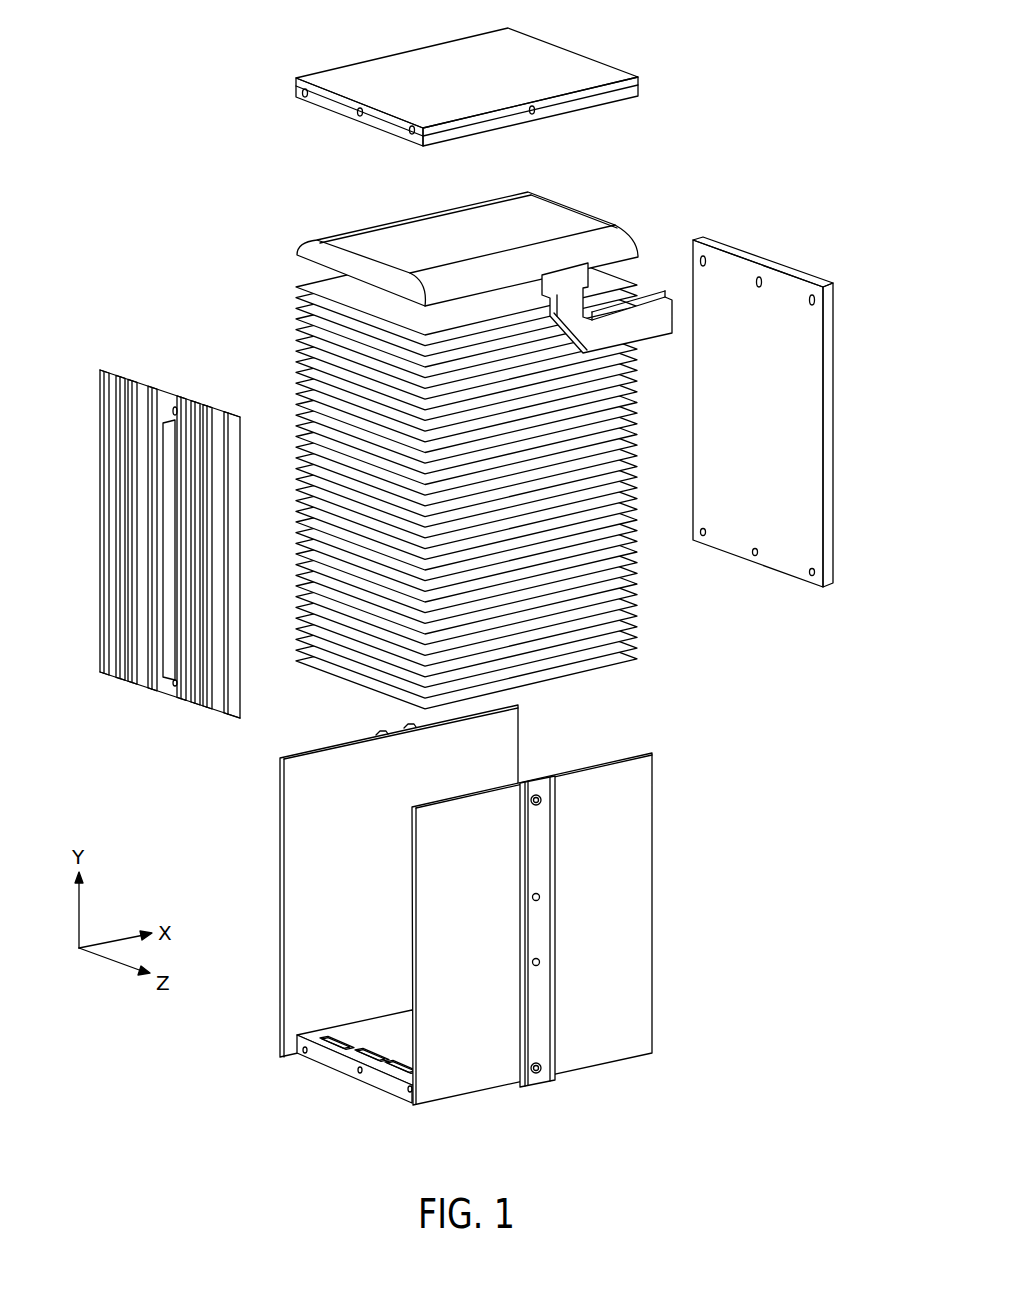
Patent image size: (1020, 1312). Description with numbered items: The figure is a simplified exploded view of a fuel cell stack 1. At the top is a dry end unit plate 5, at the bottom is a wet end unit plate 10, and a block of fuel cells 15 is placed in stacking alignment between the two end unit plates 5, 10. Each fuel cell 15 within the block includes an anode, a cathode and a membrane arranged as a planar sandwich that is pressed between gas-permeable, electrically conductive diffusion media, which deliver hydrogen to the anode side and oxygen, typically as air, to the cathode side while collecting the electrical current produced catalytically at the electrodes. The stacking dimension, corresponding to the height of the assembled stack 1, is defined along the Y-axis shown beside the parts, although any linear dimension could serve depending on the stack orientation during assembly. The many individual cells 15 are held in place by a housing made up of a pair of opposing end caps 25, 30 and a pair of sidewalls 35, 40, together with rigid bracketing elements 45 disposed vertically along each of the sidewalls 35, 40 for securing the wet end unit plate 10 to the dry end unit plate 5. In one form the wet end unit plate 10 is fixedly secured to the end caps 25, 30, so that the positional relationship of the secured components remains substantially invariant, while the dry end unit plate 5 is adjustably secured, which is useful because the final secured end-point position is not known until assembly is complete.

The fuel cell stack 1 is at (145, 98).
The dry end unit plate 5 is at (433, 57).
The wet end unit plate 10 is at (330, 1063).
The fuel cells 15 is at (638, 587).
The end cap 25 is at (100, 517).
The end cap 30 is at (808, 433).
The sidewall 35 is at (643, 863).
The sidewall 40 is at (512, 747).
The rigid bracketing elements 45 is at (556, 975).